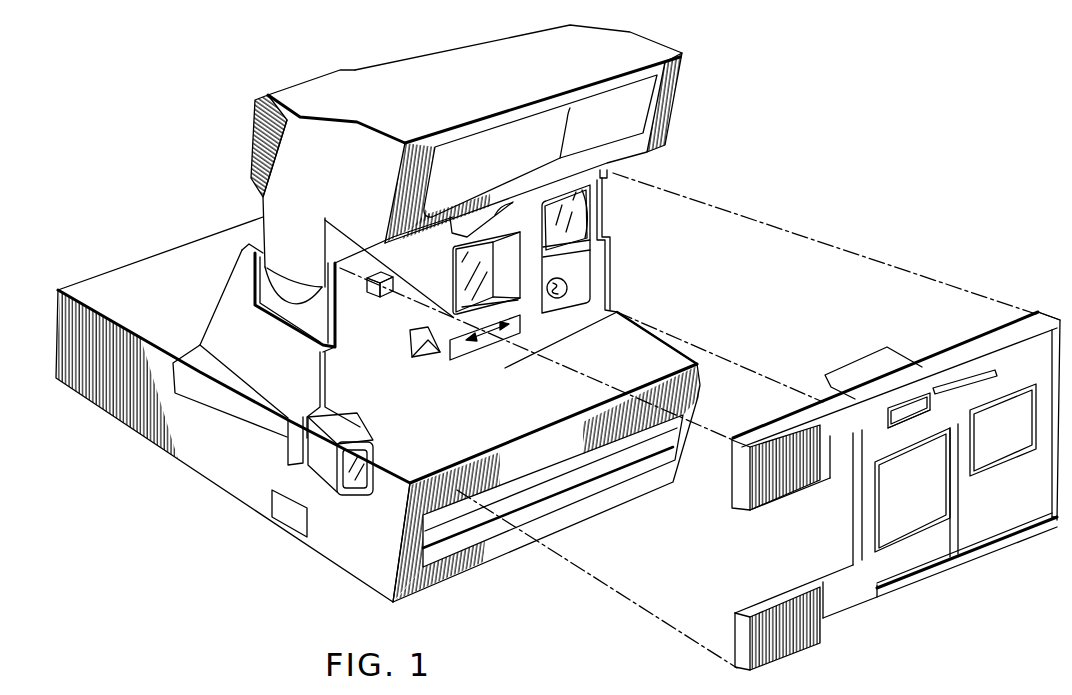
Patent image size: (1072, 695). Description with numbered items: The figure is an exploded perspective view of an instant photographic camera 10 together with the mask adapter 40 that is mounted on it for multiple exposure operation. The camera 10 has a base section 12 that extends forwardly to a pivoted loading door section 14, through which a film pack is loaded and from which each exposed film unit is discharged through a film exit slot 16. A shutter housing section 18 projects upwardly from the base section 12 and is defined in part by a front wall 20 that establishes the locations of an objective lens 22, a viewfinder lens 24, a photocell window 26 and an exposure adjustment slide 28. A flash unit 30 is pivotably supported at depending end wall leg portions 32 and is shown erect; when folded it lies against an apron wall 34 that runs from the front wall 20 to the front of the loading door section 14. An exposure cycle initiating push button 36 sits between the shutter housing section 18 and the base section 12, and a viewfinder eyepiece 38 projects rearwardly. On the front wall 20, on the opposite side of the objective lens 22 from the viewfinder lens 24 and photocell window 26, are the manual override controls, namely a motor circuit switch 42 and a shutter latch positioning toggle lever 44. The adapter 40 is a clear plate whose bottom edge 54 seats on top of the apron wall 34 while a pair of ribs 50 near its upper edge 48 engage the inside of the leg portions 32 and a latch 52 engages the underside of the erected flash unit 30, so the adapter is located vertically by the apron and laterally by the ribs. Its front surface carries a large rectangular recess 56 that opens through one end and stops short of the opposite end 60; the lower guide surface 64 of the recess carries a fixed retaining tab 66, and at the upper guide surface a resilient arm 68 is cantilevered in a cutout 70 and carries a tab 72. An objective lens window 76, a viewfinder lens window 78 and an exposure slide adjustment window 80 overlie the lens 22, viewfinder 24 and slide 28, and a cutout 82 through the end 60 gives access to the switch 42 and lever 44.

The camera 10 is at (633, 264).
The base section 12 is at (141, 432).
The loading door section 14 is at (350, 550).
The film exit slot 16 is at (478, 532).
The shutter housing section 18 is at (236, 292).
The front wall 20 is at (355, 355).
The objective lens 22 is at (460, 279).
The viewfinder lens 24 is at (572, 209).
The photocell window 26 is at (563, 298).
The exposure adjustment slide 28 is at (462, 357).
The flash unit 30 is at (655, 50).
The end wall leg portions 32 is at (326, 258).
The apron wall 34 is at (540, 402).
The push button 36 is at (372, 454).
The viewfinder eyepiece 38 is at (293, 97).
The mask adapter 40 is at (1035, 283).
The motor circuit switch 42 is at (385, 296).
The shutter latch positioning toggle lever 44 is at (418, 360).
The upper edge 48 is at (1030, 326).
The ribs 50 is at (748, 440).
The latch 52 is at (893, 365).
The bottom edge 54 is at (816, 630).
The rectangular recess 56 is at (1018, 518).
The opposite end 60 is at (745, 493).
The lower guide surface 64 is at (990, 540).
The retaining tab 66 is at (933, 574).
The resilient arm 68 is at (962, 382).
The cutout 70 is at (900, 423).
The tab 72 is at (889, 416).
The objective lens window 76 is at (953, 471).
The viewfinder lens window 78 is at (1033, 426).
The exposure slide adjustment window 80 is at (945, 545).
The cutout 82 is at (793, 590).